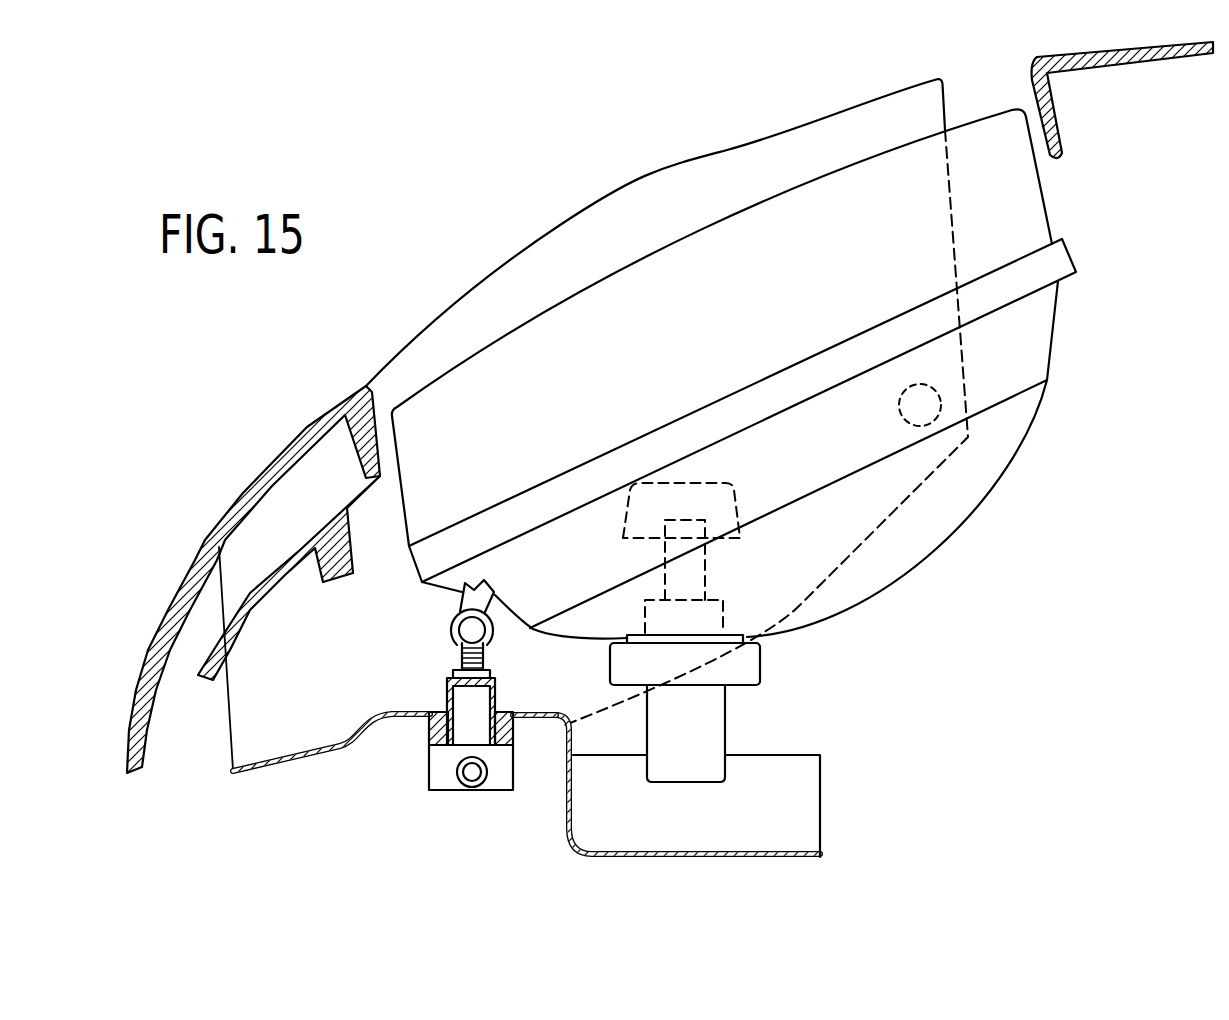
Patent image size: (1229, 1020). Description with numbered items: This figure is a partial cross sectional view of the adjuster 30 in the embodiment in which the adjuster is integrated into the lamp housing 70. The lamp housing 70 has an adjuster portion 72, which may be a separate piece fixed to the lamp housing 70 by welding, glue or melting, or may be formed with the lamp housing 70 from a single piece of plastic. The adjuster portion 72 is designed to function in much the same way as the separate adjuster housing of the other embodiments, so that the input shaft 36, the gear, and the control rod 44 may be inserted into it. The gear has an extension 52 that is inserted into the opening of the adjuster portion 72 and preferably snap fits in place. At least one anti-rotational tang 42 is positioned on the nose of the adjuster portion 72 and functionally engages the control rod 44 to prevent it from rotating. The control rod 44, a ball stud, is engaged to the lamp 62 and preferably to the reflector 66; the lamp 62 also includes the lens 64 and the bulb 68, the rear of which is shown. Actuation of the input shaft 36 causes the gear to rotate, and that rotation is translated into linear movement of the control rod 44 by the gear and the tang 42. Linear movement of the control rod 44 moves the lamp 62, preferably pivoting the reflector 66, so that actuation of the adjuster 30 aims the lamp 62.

The adjuster 30 is at (968, 886).
The input shaft 36 is at (477, 780).
The anti-rotational tang 42 is at (449, 702).
The control rod 44 is at (490, 657).
The extension 52 is at (462, 723).
The lamp 62 is at (1062, 327).
The lens 64 is at (987, 110).
The reflector 66 is at (933, 533).
The bulb 68 is at (720, 725).
The lamp housing 70 is at (263, 483).
The adjuster portion 72 is at (523, 738).